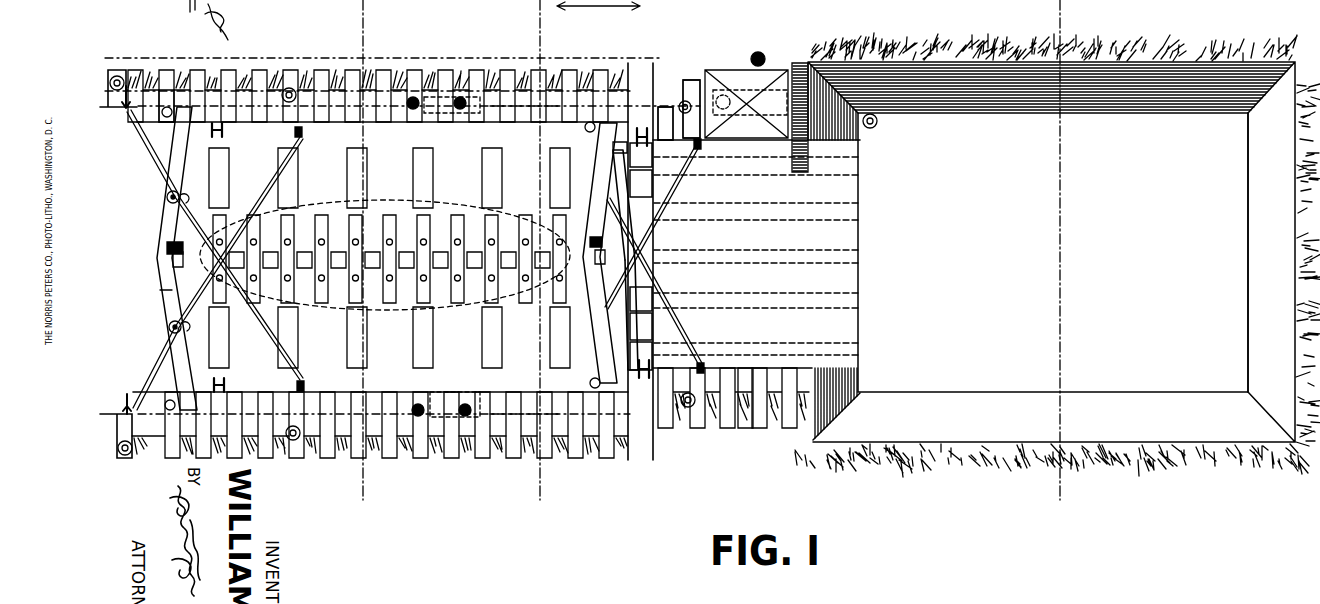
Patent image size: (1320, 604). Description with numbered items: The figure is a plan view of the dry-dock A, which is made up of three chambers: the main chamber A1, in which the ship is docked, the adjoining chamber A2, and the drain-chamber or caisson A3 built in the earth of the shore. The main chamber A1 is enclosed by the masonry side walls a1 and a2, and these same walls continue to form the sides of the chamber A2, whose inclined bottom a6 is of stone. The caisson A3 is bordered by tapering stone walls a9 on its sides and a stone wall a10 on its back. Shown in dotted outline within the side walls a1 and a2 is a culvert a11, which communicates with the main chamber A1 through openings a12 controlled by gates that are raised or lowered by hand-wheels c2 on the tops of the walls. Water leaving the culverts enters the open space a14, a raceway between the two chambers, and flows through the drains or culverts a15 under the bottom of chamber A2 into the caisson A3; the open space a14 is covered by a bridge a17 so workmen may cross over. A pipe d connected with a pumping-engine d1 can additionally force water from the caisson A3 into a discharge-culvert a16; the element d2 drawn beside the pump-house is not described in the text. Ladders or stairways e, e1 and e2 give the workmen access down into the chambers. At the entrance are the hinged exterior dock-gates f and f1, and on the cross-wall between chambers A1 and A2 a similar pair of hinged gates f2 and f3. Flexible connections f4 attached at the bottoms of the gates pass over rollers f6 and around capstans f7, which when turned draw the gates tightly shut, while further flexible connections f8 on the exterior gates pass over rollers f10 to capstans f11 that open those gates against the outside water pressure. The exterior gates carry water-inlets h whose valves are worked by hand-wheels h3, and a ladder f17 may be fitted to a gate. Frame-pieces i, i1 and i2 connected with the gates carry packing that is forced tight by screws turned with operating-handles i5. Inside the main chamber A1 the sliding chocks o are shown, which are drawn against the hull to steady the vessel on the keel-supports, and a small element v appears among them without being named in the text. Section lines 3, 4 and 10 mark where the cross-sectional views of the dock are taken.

The dry-dock A is at (400, 236).
The main chamber A1 is at (473, 178).
The chamber A2 is at (756, 254).
The drain-chamber or caisson A3 is at (1053, 252).
The side wall a1 is at (385, 72).
The side wall a2 is at (411, 452).
The inclined bottom a6 is at (756, 285).
The stone walls a9 is at (1024, 98).
The stone wall a10 is at (1255, 153).
The culvert a11 is at (558, 94).
The openings a12 is at (446, 114).
The open space a14 is at (642, 299).
The drains or culverts a15 is at (745, 182).
The discharge-culvert a16 is at (167, 108).
The bridge a17 is at (642, 255).
The hand-wheels c2 is at (412, 110).
The pipe d is at (878, 123).
The pumping-engine d1 is at (750, 93).
The pin d2 is at (773, 70).
The ladder or stairway e is at (224, 135).
The ladder or stairway e1 is at (641, 256).
The ladder or stairway e2 is at (801, 174).
The hinged dock-gate f is at (175, 163).
The hinged dock-gate f1 is at (163, 296).
The hinged dock-gate f2 is at (604, 152).
The hinged dock-gate f3 is at (605, 343).
The flexible connections f4 is at (282, 166).
The pulley-wheels or rollers f6 is at (304, 132).
The capstans f7 is at (290, 87).
The flexible connections f8 is at (162, 152).
The rollers or pulley-wheels f10 is at (119, 250).
The capstans f11 is at (119, 76).
The ladder f17 is at (293, 442).
The water-inlets h is at (166, 196).
The hand-wheels h3 is at (167, 203).
The frame-piece i is at (400, 237).
The frame-piece i1 is at (196, 126).
The frame-piece i2 is at (172, 258).
The operating-handles i5 is at (291, 241).
The chocks o is at (449, 328).
The connector tab v is at (283, 226).
The section line 3 is at (548, 258).
The section line 4 is at (369, 260).
The section line 10 is at (1075, 252).